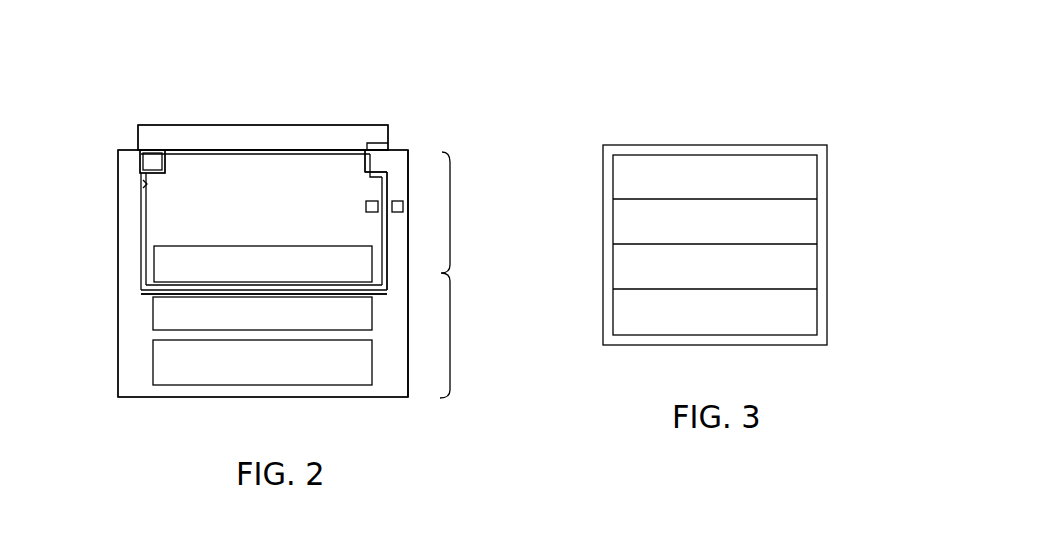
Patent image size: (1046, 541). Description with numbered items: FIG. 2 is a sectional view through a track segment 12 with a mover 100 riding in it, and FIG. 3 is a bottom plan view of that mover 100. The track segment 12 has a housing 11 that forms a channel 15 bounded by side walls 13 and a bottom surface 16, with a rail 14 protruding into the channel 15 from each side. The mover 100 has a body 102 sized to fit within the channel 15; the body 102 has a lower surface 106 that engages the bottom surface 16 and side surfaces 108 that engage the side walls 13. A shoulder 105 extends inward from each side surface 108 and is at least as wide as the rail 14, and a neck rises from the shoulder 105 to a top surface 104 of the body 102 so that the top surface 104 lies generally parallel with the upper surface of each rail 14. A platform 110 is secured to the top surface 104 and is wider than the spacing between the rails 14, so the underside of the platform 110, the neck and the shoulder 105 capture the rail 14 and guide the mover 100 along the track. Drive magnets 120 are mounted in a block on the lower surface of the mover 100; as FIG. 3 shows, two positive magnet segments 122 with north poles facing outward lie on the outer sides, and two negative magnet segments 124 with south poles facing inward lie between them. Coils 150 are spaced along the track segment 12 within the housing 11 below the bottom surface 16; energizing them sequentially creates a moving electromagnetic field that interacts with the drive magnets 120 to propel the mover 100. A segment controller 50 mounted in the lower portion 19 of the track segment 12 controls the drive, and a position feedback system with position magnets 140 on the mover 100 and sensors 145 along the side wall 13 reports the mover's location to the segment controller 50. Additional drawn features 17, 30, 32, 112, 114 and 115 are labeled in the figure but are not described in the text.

In FIG. 2, the housing 11 is at (120, 386).
In FIG. 2, the track segment 12 is at (117, 307).
In FIG. 2, the side walls 13 is at (120, 224).
In FIG. 2, the rail 14 is at (141, 164).
In FIG. 2, the channel 15 is at (120, 178).
In FIG. 2, the bottom surface 16 is at (148, 296).
In FIG. 2, the side region 17 is at (453, 210).
In FIG. 2, the lower portion 19 is at (457, 290).
In FIG. 2, the notch 30 is at (150, 175).
In FIG. 2, the tab 32 is at (167, 168).
In FIG. 2, the segment controller 50 is at (280, 377).
In FIG. 2, the mover 100 is at (182, 124).
In FIG. 3, the mover 100 is at (633, 108).
In FIG. 2, the body 102 is at (253, 163).
In FIG. 2, the top surface 104 is at (332, 153).
In FIG. 2, the shoulder 105 is at (370, 176).
In FIG. 2, the lower surface 106 is at (383, 293).
In FIG. 3, the lower surface 106 is at (742, 152).
In FIG. 2, the side surfaces 108 is at (395, 250).
In FIG. 2, the platform 110 is at (366, 146).
In FIG. 2, the cover 112 is at (210, 125).
In FIG. 2, the lip 114 is at (380, 143).
In FIG. 2, the interface 115 is at (369, 148).
In FIG. 2, the drive magnets 120 is at (217, 260).
In FIG. 3, the drive magnets 120 is at (808, 222).
In FIG. 3, the positive magnet segments 122 is at (792, 194).
In FIG. 3, the negative magnet segments 124 is at (792, 236).
In FIG. 2, the position magnets 140 is at (373, 200).
In FIG. 2, the sensors 145 is at (400, 200).
In FIG. 2, the coils 150 is at (283, 326).